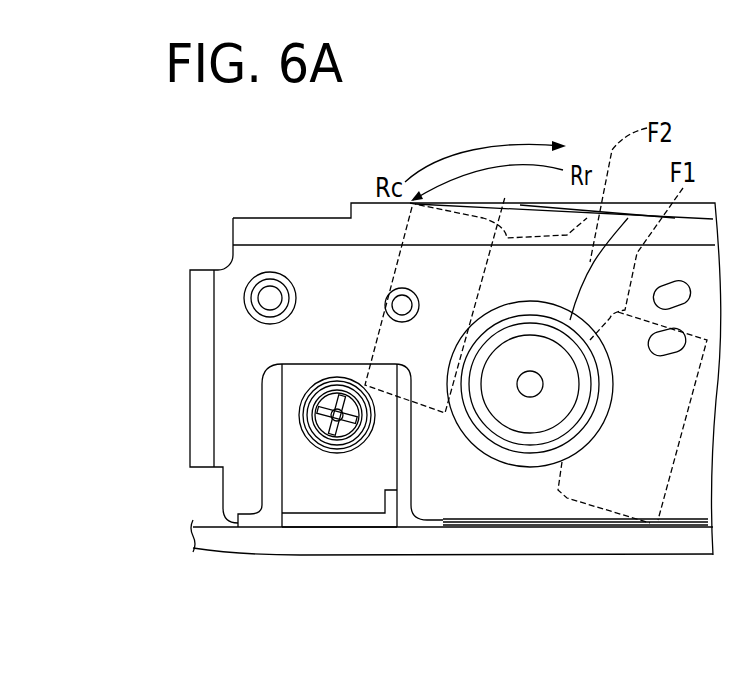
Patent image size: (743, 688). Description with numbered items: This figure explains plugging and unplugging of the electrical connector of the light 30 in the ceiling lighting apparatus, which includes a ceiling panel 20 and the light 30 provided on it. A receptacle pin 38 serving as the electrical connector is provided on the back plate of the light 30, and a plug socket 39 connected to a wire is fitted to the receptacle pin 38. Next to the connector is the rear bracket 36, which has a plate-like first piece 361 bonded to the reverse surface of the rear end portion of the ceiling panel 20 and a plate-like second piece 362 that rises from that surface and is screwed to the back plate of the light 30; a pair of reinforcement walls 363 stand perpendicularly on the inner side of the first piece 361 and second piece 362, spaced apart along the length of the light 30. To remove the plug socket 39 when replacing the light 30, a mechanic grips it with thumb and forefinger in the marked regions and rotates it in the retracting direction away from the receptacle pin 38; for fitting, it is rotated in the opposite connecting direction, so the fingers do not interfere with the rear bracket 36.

The ceiling panel 20 is at (677, 557).
The light 30 is at (262, 217).
The rear bracket 36 is at (262, 376).
The first piece 361 is at (333, 520).
The second piece 362 is at (340, 378).
The reinforcement walls 363 is at (262, 495).
The receptacle pin 38 is at (638, 215).
The plug socket 39 is at (530, 398).